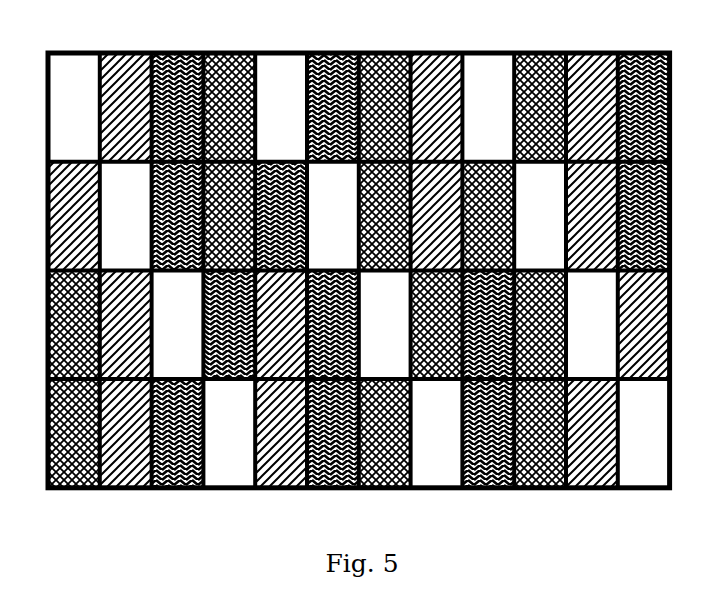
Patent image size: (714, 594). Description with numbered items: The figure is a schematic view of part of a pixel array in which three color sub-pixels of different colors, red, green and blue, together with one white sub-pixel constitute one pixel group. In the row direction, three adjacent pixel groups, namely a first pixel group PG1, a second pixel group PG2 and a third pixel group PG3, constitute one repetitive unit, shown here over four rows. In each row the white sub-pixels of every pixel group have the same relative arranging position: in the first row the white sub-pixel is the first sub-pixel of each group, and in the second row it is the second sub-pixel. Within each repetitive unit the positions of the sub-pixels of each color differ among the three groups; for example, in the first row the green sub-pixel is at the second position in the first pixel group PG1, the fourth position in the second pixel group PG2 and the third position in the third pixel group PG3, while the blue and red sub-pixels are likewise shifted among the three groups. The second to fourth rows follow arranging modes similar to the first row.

The first pixel group PG1 is at (255, 46).
The second pixel group PG2 is at (257, 46).
The third pixel group PG3 is at (464, 46).